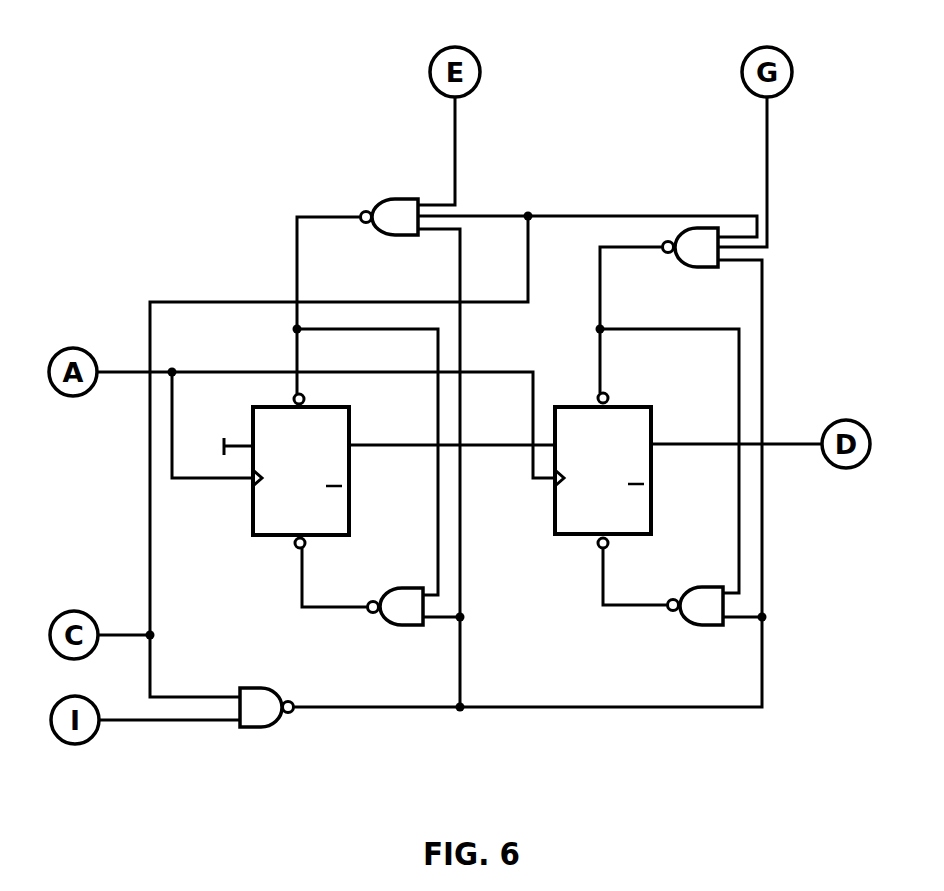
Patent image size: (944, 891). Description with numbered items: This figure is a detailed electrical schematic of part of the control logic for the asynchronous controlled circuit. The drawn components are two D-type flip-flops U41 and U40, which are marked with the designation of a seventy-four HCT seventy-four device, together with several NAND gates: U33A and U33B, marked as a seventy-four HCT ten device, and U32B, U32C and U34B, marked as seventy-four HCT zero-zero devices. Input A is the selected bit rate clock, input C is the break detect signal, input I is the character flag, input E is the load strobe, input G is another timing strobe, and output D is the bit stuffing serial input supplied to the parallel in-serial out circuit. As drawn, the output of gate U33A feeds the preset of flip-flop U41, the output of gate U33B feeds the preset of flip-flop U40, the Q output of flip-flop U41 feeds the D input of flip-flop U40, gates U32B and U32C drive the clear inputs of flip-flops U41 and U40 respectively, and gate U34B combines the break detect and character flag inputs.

The 74HCT74 D flip-flop U41 is at (293, 484).
The 74HCT74 D flip-flop U40 is at (599, 485).
The 74HCT10 NAND gate U33A is at (365, 219).
The 74HCT10 NAND gate U33B is at (680, 242).
The 74HCT00 NAND gate U32B is at (377, 606).
The 74HCT00 NAND gate U32C is at (679, 605).
The 74HCT00 NAND gate U34B is at (246, 709).